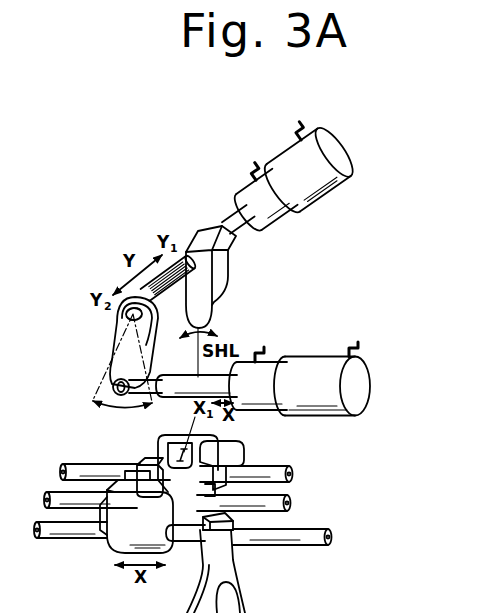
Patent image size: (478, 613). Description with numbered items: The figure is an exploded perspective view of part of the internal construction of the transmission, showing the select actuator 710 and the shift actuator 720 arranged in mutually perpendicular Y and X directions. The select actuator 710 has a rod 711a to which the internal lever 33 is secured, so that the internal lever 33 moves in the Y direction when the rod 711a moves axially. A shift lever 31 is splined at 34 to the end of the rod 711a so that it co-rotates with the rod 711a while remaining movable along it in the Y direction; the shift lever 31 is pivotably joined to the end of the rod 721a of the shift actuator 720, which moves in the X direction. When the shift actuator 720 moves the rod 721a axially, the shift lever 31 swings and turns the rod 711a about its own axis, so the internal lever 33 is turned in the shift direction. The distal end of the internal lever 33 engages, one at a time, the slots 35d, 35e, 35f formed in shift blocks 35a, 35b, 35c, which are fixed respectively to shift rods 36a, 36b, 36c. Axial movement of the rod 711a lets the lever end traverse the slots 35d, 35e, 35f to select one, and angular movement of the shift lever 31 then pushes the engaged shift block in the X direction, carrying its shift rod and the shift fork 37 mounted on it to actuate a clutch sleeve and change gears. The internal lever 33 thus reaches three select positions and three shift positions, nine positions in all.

The select actuator 710 is at (335, 158).
The rod 711a is at (230, 222).
The internal lever 33 is at (227, 252).
The spline 34 is at (160, 277).
The shift lever 31 is at (117, 325).
The rod 721a is at (233, 373).
The shift actuator 720 is at (333, 417).
The shift block 35a is at (223, 453).
The shift block 35b is at (210, 488).
The shift block 35c is at (113, 547).
The slot 35d is at (163, 450).
The slot 35e is at (145, 467).
The slot 35f is at (108, 495).
The shift rod 36a is at (290, 467).
The shift rod 36b is at (290, 503).
The shift rod 36c is at (328, 543).
The shift fork 37 is at (243, 583).